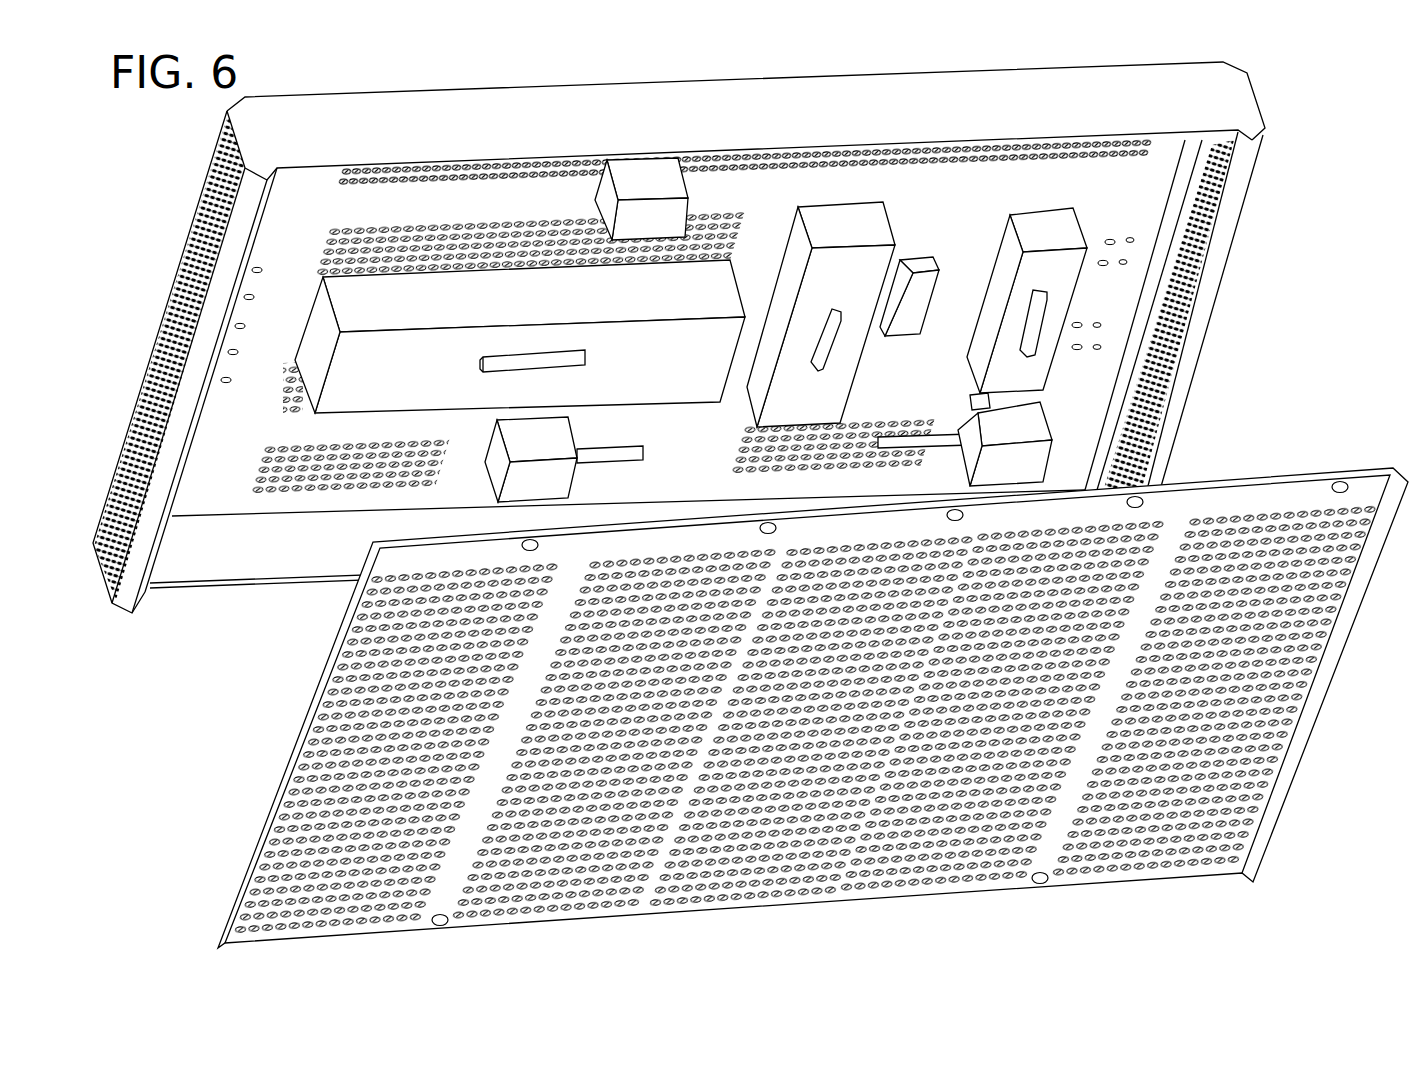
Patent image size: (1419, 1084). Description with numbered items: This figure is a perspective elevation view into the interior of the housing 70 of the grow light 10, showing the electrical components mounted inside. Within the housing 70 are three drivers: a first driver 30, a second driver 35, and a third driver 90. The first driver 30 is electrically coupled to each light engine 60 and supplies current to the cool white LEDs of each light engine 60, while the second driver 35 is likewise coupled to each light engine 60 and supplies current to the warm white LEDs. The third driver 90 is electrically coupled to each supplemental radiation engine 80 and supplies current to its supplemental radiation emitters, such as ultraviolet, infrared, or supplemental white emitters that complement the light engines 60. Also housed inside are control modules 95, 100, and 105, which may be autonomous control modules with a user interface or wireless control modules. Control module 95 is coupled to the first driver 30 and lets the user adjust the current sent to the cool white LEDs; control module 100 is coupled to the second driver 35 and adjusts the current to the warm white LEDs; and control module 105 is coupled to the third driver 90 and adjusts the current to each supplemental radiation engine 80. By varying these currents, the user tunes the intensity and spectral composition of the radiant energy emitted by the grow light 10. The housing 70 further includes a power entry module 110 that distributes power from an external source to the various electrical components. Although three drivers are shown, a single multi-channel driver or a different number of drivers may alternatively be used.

The grow light 10 is at (187, 862).
The first driver 30 is at (345, 407).
The second driver 35 is at (818, 205).
The light engine 60 is at (813, 708).
The housing 70 is at (282, 118).
The supplemental radiation engine 80 is at (1050, 893).
The third driver 90 is at (1066, 211).
The control module 95 is at (476, 476).
The control module 100 is at (630, 152).
The control module 105 is at (1050, 418).
The power entry module 110 is at (927, 241).